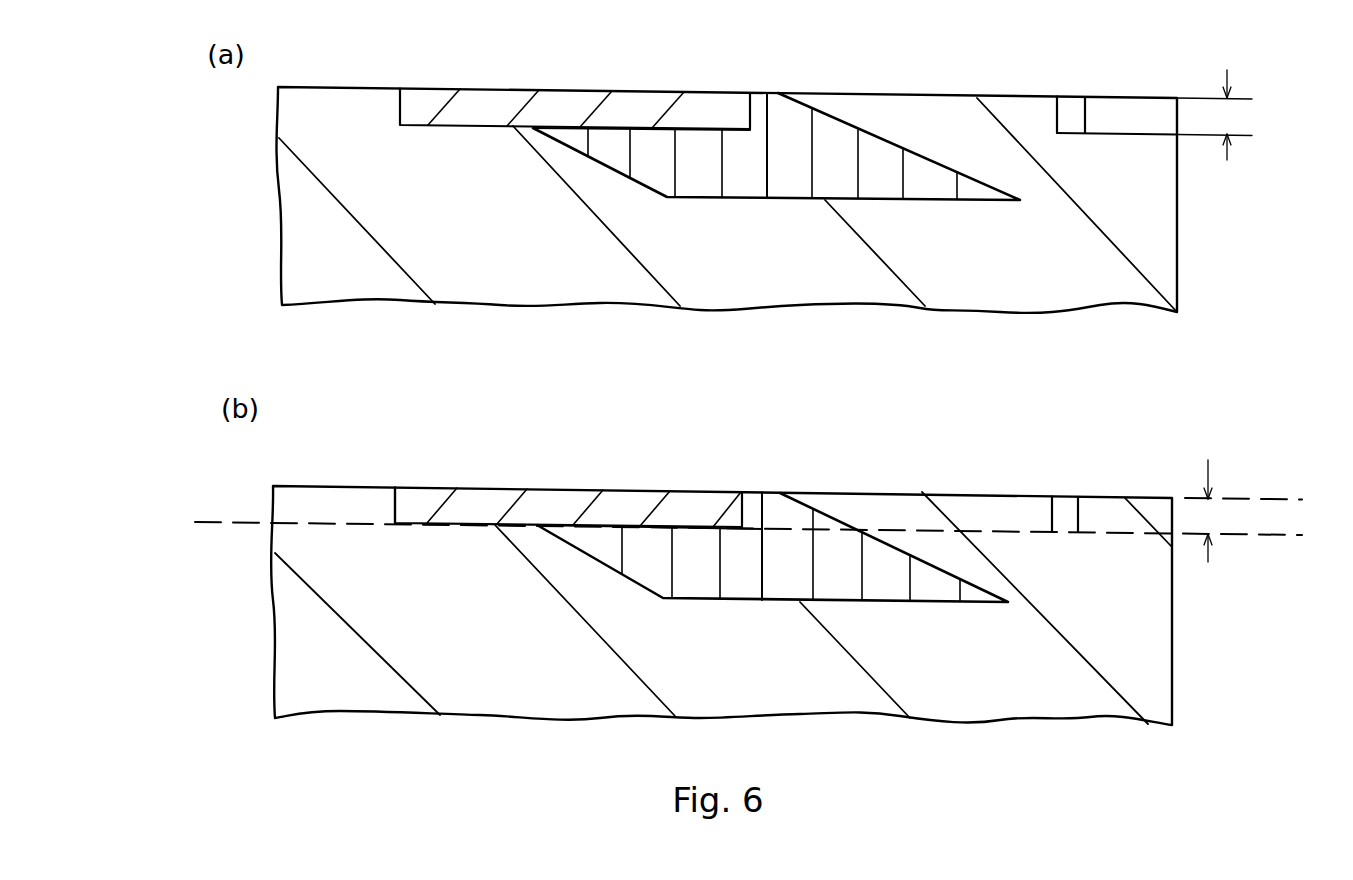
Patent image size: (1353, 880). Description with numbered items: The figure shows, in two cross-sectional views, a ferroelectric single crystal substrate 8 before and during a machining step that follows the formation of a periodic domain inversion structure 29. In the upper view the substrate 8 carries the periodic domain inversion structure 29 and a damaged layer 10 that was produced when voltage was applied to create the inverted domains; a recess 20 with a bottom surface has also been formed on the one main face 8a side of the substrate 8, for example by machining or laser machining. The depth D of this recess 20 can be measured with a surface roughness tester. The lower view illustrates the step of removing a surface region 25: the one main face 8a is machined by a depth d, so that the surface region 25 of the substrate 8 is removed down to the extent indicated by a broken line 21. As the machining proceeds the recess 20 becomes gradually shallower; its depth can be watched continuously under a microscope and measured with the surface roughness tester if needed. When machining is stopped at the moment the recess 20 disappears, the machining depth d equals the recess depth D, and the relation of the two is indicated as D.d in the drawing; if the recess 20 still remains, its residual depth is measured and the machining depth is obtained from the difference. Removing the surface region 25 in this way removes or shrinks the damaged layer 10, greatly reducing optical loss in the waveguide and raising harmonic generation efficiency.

The ferroelectric single crystal substrate 8 is at (1167, 223).
The one main face 8a is at (1097, 97).
The damaged layer 10 is at (508, 103).
The recess 20 is at (1060, 112).
The broken line 21 is at (1272, 532).
The surface region 25 is at (338, 498).
The periodic domain inversion structure 29 is at (832, 145).
The depth of the recess D is at (1230, 115).
The reduced groove depth D.d is at (1208, 516).